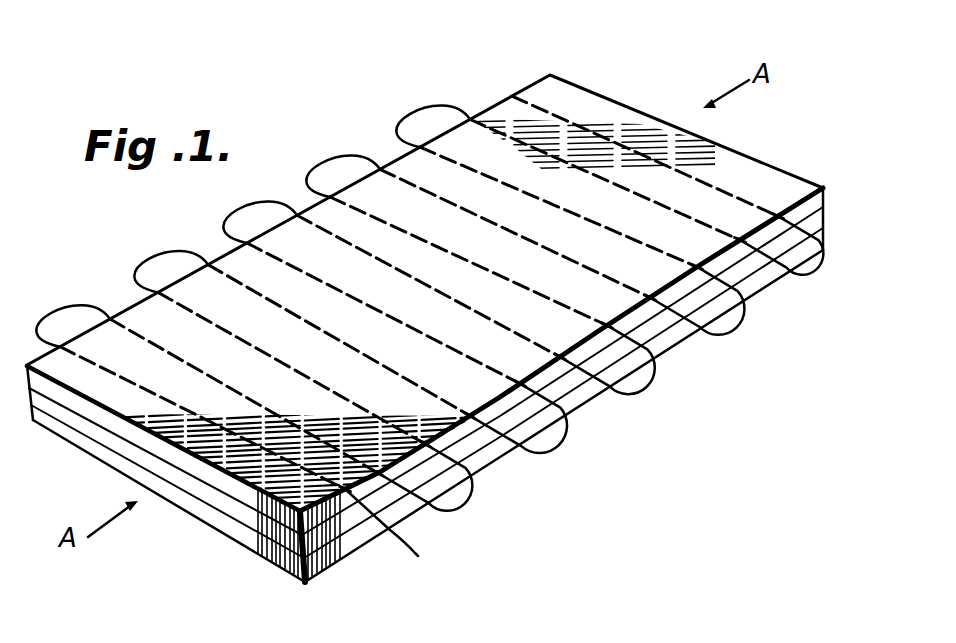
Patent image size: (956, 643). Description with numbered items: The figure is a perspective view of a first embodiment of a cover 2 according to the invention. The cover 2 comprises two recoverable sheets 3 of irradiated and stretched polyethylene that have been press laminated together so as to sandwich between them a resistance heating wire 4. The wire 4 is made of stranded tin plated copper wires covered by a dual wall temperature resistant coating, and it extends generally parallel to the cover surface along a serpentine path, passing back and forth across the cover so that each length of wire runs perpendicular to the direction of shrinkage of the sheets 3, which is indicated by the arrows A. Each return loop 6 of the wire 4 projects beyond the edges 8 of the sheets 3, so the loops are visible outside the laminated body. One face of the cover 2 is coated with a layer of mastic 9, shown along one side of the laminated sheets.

The cover 2 is at (560, 71).
The recoverable sheets 3 is at (277, 525).
The resistance heating wire 4 is at (512, 96).
The return loop 6 is at (358, 160).
The edges 8 is at (213, 258).
The layer of mastic 9 is at (222, 520).